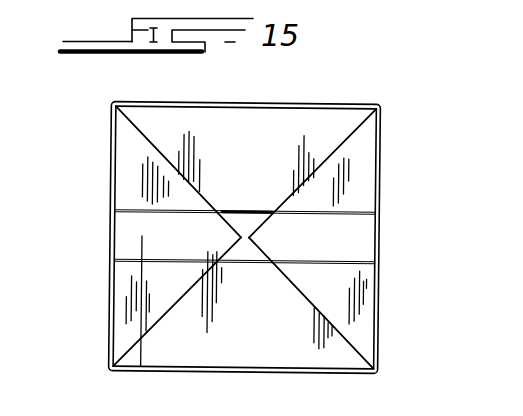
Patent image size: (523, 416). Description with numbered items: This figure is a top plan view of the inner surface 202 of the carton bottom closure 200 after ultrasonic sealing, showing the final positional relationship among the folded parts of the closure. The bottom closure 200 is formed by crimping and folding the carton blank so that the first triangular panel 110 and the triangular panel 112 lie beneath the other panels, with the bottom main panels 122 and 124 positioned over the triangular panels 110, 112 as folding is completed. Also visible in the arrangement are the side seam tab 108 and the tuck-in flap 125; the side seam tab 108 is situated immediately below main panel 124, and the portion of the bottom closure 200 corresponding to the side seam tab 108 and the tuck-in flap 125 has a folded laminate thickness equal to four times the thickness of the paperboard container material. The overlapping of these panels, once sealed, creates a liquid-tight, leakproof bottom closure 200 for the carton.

The bottom closure 200 is at (97, 277).
The inner surface 202 is at (245, 142).
The main panel 122 is at (318, 123).
The side seam tab 108 is at (135, 355).
The main panel 124 is at (327, 342).
The tuck-in flap 125 is at (243, 223).
The first triangular panel 110 is at (132, 173).
The triangular panel 112 is at (355, 193).